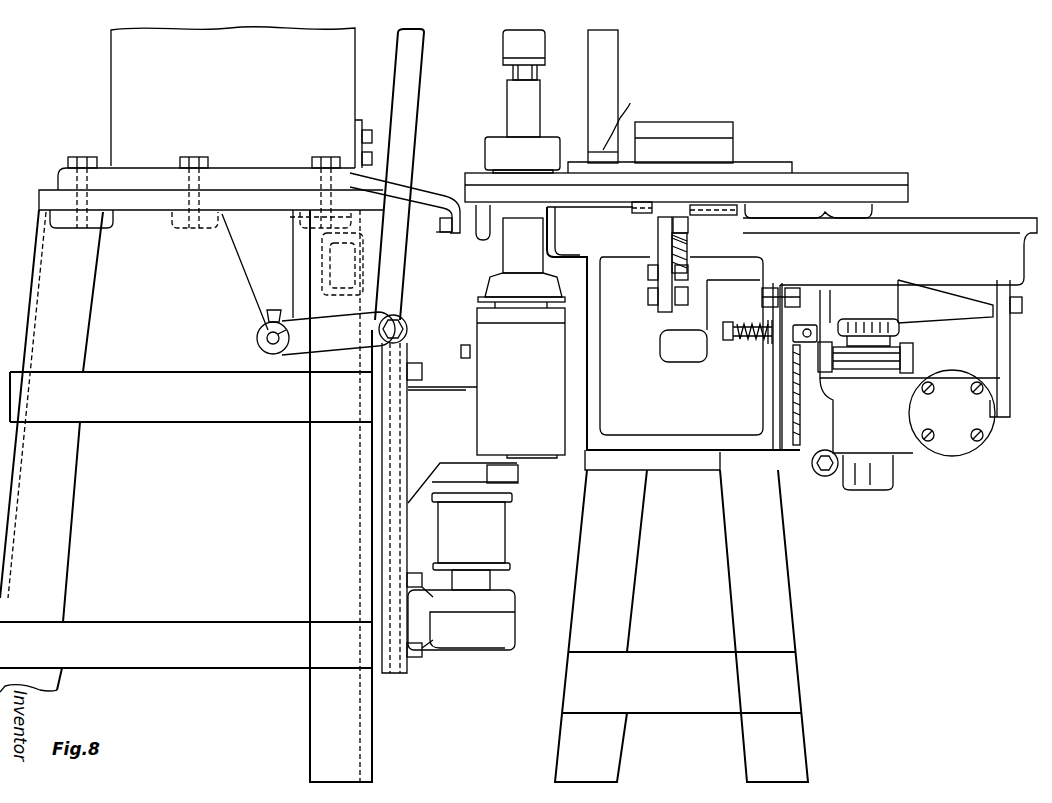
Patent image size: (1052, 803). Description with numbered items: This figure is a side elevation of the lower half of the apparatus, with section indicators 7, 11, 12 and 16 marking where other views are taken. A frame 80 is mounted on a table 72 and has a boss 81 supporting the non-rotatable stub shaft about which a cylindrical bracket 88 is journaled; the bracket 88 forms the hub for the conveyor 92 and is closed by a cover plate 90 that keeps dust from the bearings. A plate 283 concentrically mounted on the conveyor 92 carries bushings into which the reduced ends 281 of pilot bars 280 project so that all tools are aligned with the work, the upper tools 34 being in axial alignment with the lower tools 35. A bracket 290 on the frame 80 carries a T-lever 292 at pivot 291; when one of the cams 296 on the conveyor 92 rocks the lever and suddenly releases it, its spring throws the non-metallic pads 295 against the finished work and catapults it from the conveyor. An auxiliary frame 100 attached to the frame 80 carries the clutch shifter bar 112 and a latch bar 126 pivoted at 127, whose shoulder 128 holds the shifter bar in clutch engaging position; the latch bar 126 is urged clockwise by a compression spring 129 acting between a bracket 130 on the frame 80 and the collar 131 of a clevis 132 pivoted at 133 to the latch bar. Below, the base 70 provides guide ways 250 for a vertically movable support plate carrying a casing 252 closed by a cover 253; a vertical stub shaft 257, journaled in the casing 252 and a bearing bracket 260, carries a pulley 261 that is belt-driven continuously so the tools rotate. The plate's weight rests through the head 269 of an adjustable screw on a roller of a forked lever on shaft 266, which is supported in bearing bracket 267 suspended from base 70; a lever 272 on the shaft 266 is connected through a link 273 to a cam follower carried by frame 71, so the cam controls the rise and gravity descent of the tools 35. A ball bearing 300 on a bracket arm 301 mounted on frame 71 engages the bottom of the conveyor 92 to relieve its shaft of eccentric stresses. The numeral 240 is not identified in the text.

The frame 71 is at (123, 94).
The base 70 is at (60, 486).
The link 273 is at (405, 102).
The ball bearing 300 is at (457, 243).
The bracket arm 301 is at (473, 260).
The bearing bracket 267 is at (256, 313).
The shaft 266 is at (272, 358).
The lever 272 is at (348, 338).
The head of screw 269 is at (388, 307).
The guide ways 250 is at (405, 509).
The knob 240 is at (513, 47).
The tools 34 is at (522, 122).
The pilot bars 280 is at (610, 63).
The reduced ends 281 is at (632, 118).
The conveyor 92 is at (880, 180).
The plate 283 is at (780, 164).
The cover plate 90 is at (722, 128).
The cylindrical bracket 88 is at (718, 152).
The cams 296 is at (780, 208).
The non-metallic pads 295 is at (632, 207).
The frame 80 is at (592, 389).
The tools 35 is at (527, 253).
The casing 252 is at (500, 347).
The cover 253 is at (465, 388).
The vertical stub shaft 257 is at (482, 490).
The pulley 261 is at (488, 518).
The bearing bracket 260 is at (498, 620).
The bracket 290 is at (663, 250).
The pivot 291 is at (660, 224).
The T-lever 292 is at (685, 225).
The boss 81 is at (662, 323).
The compression spring 129 is at (753, 321).
The bracket 130 is at (748, 345).
The pivot 133 is at (808, 327).
The collar 131 is at (780, 280).
The clevis 132 is at (780, 348).
The clutch shifter bar 112 is at (825, 358).
The shoulder 128 is at (842, 320).
The latch bar 126 is at (818, 400).
The auxiliary frame 100 is at (913, 443).
The pivot 127 is at (823, 473).
The table 72 is at (777, 610).
The section line 7- 7 is at (388, 295).
The section line 16- 16 is at (470, 718).
The section line 11- 11 is at (680, 100).
The section line 12- 12 is at (872, 213).